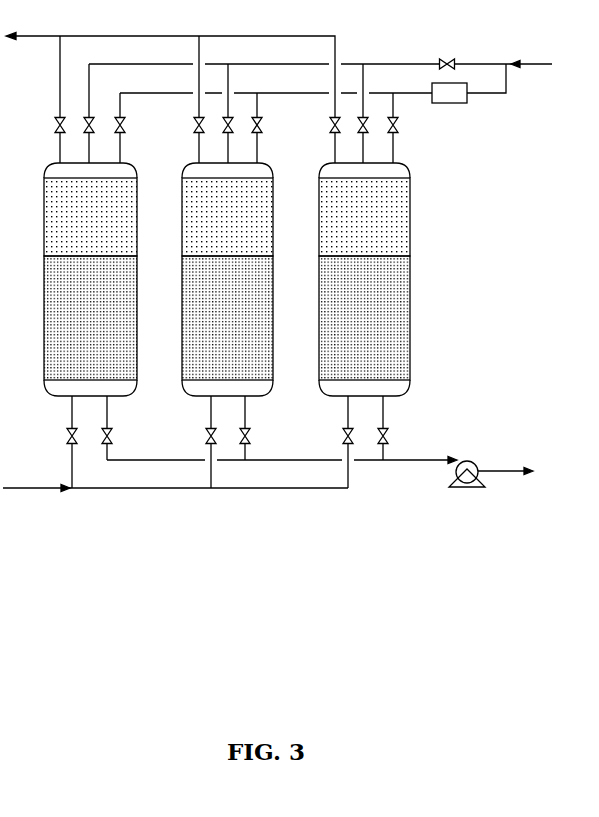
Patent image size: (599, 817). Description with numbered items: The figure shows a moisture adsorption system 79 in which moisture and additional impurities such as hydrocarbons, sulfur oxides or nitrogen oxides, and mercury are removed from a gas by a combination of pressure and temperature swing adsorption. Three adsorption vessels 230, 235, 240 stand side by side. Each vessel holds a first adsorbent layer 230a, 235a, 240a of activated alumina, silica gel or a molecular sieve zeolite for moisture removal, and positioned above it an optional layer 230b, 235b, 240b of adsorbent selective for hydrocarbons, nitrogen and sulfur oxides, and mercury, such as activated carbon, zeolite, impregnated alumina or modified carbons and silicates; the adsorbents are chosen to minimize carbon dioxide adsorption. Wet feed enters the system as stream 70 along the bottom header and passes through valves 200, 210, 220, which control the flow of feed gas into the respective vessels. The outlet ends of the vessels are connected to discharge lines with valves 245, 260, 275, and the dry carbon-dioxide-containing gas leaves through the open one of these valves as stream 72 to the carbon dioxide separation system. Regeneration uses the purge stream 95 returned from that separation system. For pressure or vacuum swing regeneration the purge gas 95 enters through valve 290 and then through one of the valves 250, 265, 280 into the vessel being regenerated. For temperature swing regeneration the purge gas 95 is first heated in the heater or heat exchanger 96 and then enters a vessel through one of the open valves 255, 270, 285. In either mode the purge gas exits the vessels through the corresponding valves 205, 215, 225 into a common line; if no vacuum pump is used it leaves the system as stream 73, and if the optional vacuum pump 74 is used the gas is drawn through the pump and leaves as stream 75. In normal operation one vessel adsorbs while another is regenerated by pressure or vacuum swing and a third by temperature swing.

The wet feed stream 70 is at (40, 489).
The dry CO2-containing stream 72 is at (40, 37).
The purge gas exit stream 73 is at (424, 461).
The vacuum pump 74 is at (468, 488).
The pump discharge stream 75 is at (498, 472).
The moisture adsorption system 79 is at (428, 233).
The purge stream 95 is at (540, 66).
The heater or heat exchanger 96 is at (456, 103).
The feed valve 200 is at (57, 442).
The purge exit valve 205 is at (122, 428).
The feed valve 210 is at (198, 442).
The purge exit valve 215 is at (260, 428).
The feed valve 220 is at (334, 442).
The purge exit valve 225 is at (399, 428).
The first adsorption vessel 230 is at (44, 272).
The first adsorbent layer 230a is at (90, 318).
The optional adsorbent layer 230b is at (90, 217).
The second adsorption vessel 235 is at (182, 272).
The first adsorbent layer 235a is at (227, 318).
The optional adsorbent layer 235b is at (227, 217).
The third adsorption vessel 240 is at (319, 272).
The first adsorbent layer 240a is at (364, 318).
The optional adsorbent layer 240b is at (364, 217).
The discharge valve 245 is at (46, 99).
The PSA/VSA purge inlet valve 250 is at (100, 113).
The TSA purge inlet valve 255 is at (136, 128).
The discharge valve 260 is at (185, 99).
The PSA/VSA purge inlet valve 265 is at (240, 113).
The TSA purge inlet valve 270 is at (271, 128).
The discharge valve 275 is at (321, 140).
The PSA/VSA purge inlet valve 280 is at (375, 113).
The TSA purge inlet valve 285 is at (411, 128).
The purge gas valve 290 is at (451, 56).